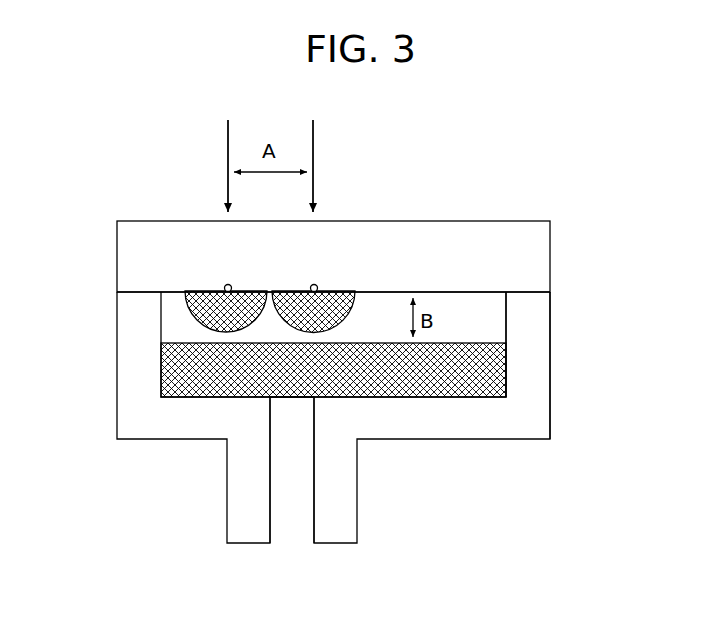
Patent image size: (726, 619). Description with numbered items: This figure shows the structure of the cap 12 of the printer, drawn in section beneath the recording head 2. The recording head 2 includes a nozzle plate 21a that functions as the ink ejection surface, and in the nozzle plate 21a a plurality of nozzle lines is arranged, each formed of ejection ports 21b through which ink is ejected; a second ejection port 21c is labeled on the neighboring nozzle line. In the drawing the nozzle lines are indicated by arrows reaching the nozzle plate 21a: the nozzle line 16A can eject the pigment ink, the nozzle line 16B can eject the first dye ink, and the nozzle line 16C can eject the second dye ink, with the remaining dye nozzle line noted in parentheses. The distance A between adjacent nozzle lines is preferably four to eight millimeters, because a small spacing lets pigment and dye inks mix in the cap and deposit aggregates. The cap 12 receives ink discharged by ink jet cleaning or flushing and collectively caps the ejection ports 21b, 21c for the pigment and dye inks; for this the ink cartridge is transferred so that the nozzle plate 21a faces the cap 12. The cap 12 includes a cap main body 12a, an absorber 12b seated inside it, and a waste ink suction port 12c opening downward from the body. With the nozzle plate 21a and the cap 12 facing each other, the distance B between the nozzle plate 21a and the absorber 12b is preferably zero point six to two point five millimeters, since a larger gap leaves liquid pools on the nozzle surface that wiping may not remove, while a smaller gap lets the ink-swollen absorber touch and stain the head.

The recording head 2 is at (563, 234).
The cap 12 is at (160, 453).
The cap main body 12a is at (550, 373).
The absorber 12b is at (455, 380).
The waste ink suction port 12c is at (292, 473).
The nozzle plate 21a is at (181, 293).
The ejection port 21b is at (227, 284).
The second droplet / lens 21c is at (327, 306).
The nozzle line 16A is at (232, 151).
The nozzle line 16B is at (314, 151).
The nozzle line 16C is at (360, 151).